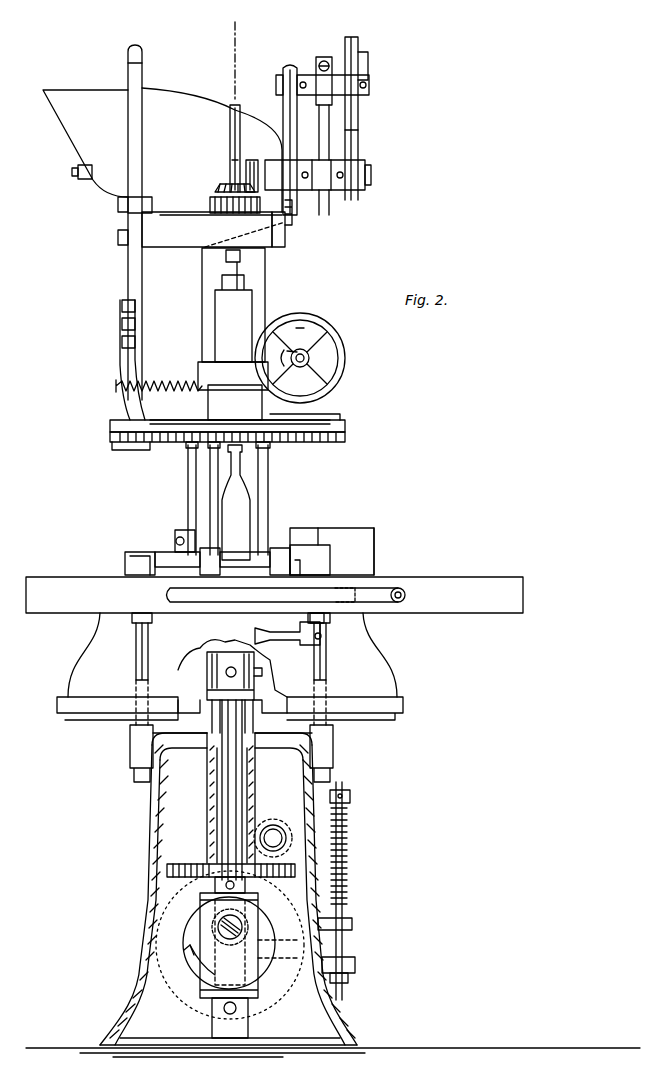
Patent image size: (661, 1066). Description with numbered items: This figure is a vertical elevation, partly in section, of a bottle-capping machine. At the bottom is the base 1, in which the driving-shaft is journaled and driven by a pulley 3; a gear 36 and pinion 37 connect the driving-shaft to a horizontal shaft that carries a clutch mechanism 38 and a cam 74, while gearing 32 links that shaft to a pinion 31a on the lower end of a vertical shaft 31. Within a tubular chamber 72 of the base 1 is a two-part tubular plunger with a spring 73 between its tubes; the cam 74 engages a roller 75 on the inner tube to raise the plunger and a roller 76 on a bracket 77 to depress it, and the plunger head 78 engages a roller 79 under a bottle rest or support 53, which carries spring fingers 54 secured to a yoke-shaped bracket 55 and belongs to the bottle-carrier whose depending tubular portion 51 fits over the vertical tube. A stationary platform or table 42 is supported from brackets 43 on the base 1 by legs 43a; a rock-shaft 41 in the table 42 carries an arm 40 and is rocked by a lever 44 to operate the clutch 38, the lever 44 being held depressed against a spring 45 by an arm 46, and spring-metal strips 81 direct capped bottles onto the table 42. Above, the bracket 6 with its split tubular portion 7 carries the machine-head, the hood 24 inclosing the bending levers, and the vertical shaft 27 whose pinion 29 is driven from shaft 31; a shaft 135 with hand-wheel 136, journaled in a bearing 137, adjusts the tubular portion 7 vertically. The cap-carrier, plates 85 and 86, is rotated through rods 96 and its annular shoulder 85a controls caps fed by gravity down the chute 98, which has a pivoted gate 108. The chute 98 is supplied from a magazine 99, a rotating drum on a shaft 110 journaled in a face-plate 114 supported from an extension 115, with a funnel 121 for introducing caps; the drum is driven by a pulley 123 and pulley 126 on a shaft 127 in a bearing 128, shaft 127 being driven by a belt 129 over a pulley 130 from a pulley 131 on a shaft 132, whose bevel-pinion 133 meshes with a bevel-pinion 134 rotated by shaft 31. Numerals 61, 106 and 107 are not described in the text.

The base 1 is at (150, 816).
The pulley 3 is at (233, 51).
The bracket 6 is at (233, 306).
The split tubular portion 7 is at (237, 319).
The hood 24 is at (235, 402).
The vertical shaft 27 is at (228, 180).
The pinion 29 is at (210, 204).
The vertical shaft 31 is at (241, 118).
The pinion 31a is at (210, 866).
The gearing 32 is at (167, 871).
The gear 36 is at (160, 958).
The pinion 37 is at (282, 822).
The clutch mechanism 38 is at (218, 934).
The arm 40 is at (360, 585).
The rock-shaft 41 is at (404, 590).
The platform or table 42 is at (274, 595).
The bracket 43 is at (130, 750).
The leg 43a is at (403, 658).
The lever 44 is at (168, 593).
The spring 45 is at (350, 856).
The arm 46 is at (289, 629).
The depending tubular portion 51 is at (232, 697).
The bottle rest or support 53 is at (215, 655).
The spring fingers or clips 54 is at (366, 524).
The yoke-shaped bracket 55 is at (128, 562).
The frame 61 is at (395, 678).
The tubular chamber 72 is at (218, 776).
The spring 73 is at (233, 790).
The cam 74 is at (190, 916).
The roller 75 is at (258, 900).
The roller 76 is at (212, 1020).
The bracket 77 is at (258, 990).
The head 78 is at (264, 670).
The roller 79 is at (231, 665).
The strips 81 is at (342, 532).
The upper plate 85 is at (340, 428).
The annular shoulder 85a is at (330, 422).
The lower plate 86 is at (332, 440).
The rods 96 is at (188, 490).
The chute 98 is at (122, 352).
The magazine 99 is at (221, 176).
The spring 106 is at (159, 373).
The plate 107 is at (316, 407).
The gate 108 is at (124, 450).
The shaft 110 is at (72, 172).
The face-plate 114 is at (128, 78).
The extension 115 is at (201, 222).
The funnel 121 is at (162, 150).
The pulley 123 is at (303, 215).
The pulley 126 is at (289, 70).
The shaft 127 is at (276, 84).
The bearing 128 is at (333, 58).
The belt 129 is at (356, 38).
The pulley 130 is at (361, 50).
The pulley 131 is at (362, 162).
The shaft 132 is at (372, 174).
The bevel-pinion 133 is at (252, 162).
The bevel-pinion 134 is at (220, 186).
The shaft 135 is at (310, 358).
The hand-wheel 136 is at (324, 316).
The bearing 137 is at (290, 345).